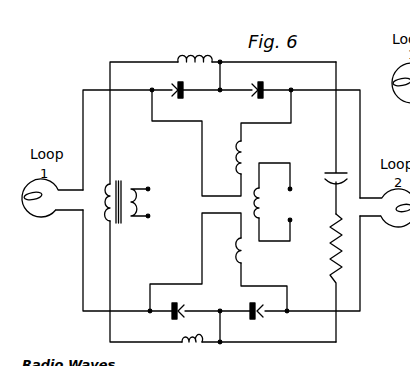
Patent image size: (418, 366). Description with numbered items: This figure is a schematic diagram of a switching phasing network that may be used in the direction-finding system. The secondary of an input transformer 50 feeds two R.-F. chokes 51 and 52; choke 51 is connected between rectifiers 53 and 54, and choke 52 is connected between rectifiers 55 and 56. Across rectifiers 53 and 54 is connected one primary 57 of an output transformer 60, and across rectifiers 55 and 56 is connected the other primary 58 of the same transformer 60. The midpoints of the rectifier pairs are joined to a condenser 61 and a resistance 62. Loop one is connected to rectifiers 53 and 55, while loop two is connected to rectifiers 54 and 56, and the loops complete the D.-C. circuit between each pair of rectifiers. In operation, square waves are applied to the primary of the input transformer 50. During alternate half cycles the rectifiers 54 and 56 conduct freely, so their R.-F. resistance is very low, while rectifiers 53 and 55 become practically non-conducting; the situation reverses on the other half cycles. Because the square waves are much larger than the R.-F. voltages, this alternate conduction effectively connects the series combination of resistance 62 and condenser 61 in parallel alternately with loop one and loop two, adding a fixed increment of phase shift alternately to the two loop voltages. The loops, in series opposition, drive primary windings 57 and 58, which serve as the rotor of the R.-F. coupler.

The input transformer 50 is at (121, 220).
The R.-F. choke 51 is at (201, 40).
The R.-F. choke 52 is at (203, 351).
The rectifier 53 is at (186, 98).
The rectifier 54 is at (257, 99).
The rectifier 55 is at (172, 320).
The rectifier 56 is at (257, 319).
The primary 57 is at (248, 158).
The primary 58 is at (247, 247).
The output transformer 60 is at (287, 210).
The condenser 61 is at (324, 175).
The resistance 62 is at (328, 262).